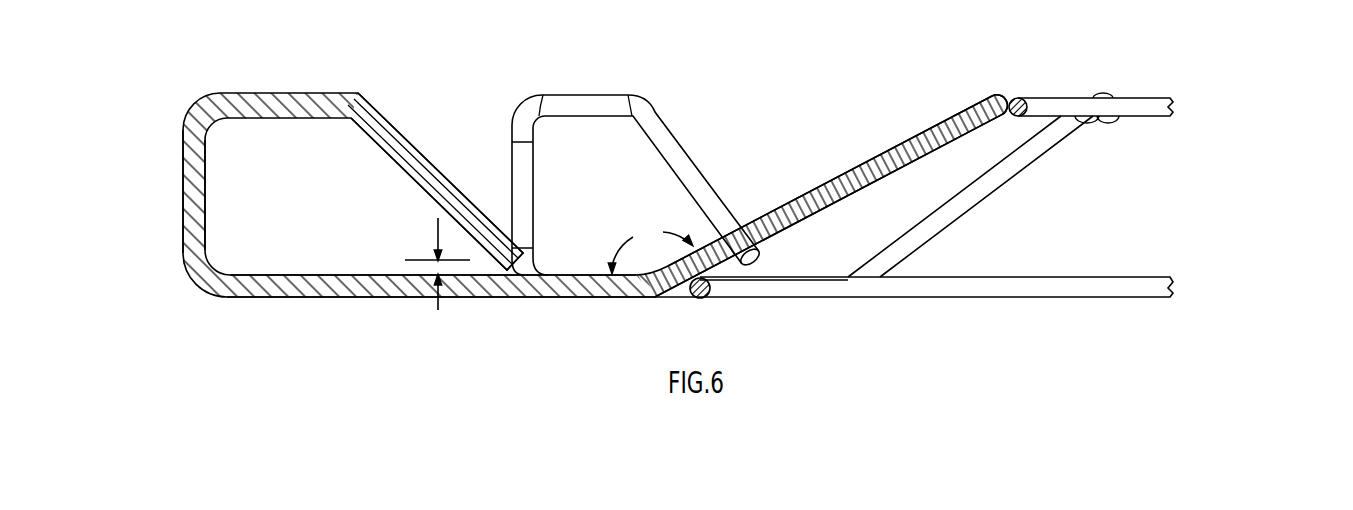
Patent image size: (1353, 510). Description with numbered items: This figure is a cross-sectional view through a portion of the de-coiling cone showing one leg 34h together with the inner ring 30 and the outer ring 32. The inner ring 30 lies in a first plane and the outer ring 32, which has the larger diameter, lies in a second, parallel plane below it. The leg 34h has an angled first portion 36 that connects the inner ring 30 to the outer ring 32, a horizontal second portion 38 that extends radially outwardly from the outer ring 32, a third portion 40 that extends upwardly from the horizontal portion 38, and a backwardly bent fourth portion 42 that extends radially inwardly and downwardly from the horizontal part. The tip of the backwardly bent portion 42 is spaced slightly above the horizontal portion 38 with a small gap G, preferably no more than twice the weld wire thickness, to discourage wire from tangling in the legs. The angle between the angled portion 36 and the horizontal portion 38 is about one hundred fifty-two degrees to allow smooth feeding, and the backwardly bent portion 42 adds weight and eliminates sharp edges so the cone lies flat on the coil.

The leg 34h is at (184, 107).
The backwardly bent fourth portion 42 is at (366, 100).
The third portion 40 is at (182, 207).
The horizontal second portion 38 is at (333, 297).
The angled first portion 36 is at (855, 168).
The inner ring 30 is at (1053, 97).
The outer ring 32 is at (1078, 277).
The gap G is at (437, 285).